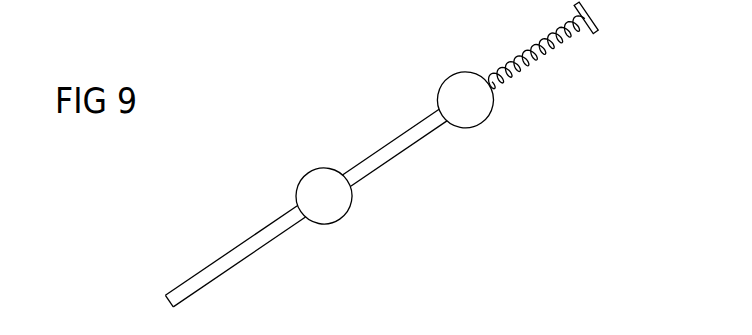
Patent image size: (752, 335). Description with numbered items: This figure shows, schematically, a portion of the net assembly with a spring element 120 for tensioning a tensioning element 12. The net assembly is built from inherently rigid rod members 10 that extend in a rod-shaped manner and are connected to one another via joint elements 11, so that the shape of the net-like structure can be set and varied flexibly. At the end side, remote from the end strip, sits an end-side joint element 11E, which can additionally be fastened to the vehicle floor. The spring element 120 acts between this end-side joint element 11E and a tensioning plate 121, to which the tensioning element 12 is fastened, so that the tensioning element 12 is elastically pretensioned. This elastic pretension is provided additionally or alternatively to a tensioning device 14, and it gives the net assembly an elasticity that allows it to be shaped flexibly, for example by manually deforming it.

The rod member 10 is at (232, 256).
The joint element 11 is at (312, 193).
The end-side joint element 11E is at (457, 90).
The tensioning element 12 is at (523, 74).
The spring element 120 is at (575, 74).
The tensioning plate 121 is at (601, 32).
The tensioning device 14 is at (266, 0).